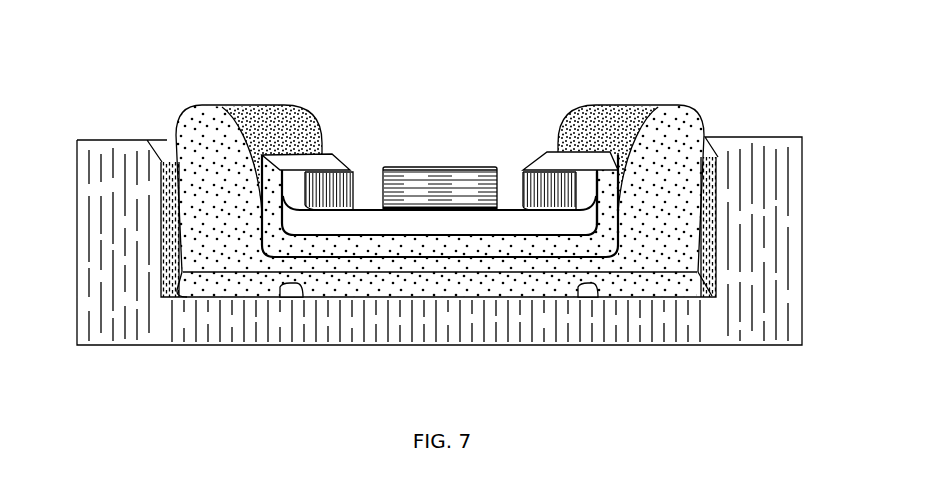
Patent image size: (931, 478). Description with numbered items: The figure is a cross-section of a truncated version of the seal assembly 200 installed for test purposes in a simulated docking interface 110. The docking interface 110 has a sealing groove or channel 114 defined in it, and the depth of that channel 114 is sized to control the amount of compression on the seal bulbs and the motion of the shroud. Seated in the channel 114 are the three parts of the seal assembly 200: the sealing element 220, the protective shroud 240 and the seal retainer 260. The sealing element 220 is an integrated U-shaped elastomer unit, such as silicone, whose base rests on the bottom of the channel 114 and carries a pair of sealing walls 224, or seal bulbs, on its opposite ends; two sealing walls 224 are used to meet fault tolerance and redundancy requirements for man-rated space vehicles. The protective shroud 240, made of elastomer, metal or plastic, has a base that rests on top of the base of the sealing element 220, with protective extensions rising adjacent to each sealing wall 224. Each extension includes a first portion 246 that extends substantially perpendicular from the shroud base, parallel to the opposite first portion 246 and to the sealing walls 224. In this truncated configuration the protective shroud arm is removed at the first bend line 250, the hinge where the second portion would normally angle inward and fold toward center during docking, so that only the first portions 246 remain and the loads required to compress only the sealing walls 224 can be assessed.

The seal assembly 200 is at (182, 93).
The simulated docking interface 110 is at (92, 252).
The interface sealing groove or channel 114 is at (177, 294).
The sealing element 220 is at (323, 286).
The sealing walls (seal bulbs) 224 is at (688, 236).
The protective shroud 240 is at (423, 253).
The first portion 246 is at (607, 226).
The first bend line (hinge) 250 is at (614, 160).
The seal retainer 260 is at (540, 228).